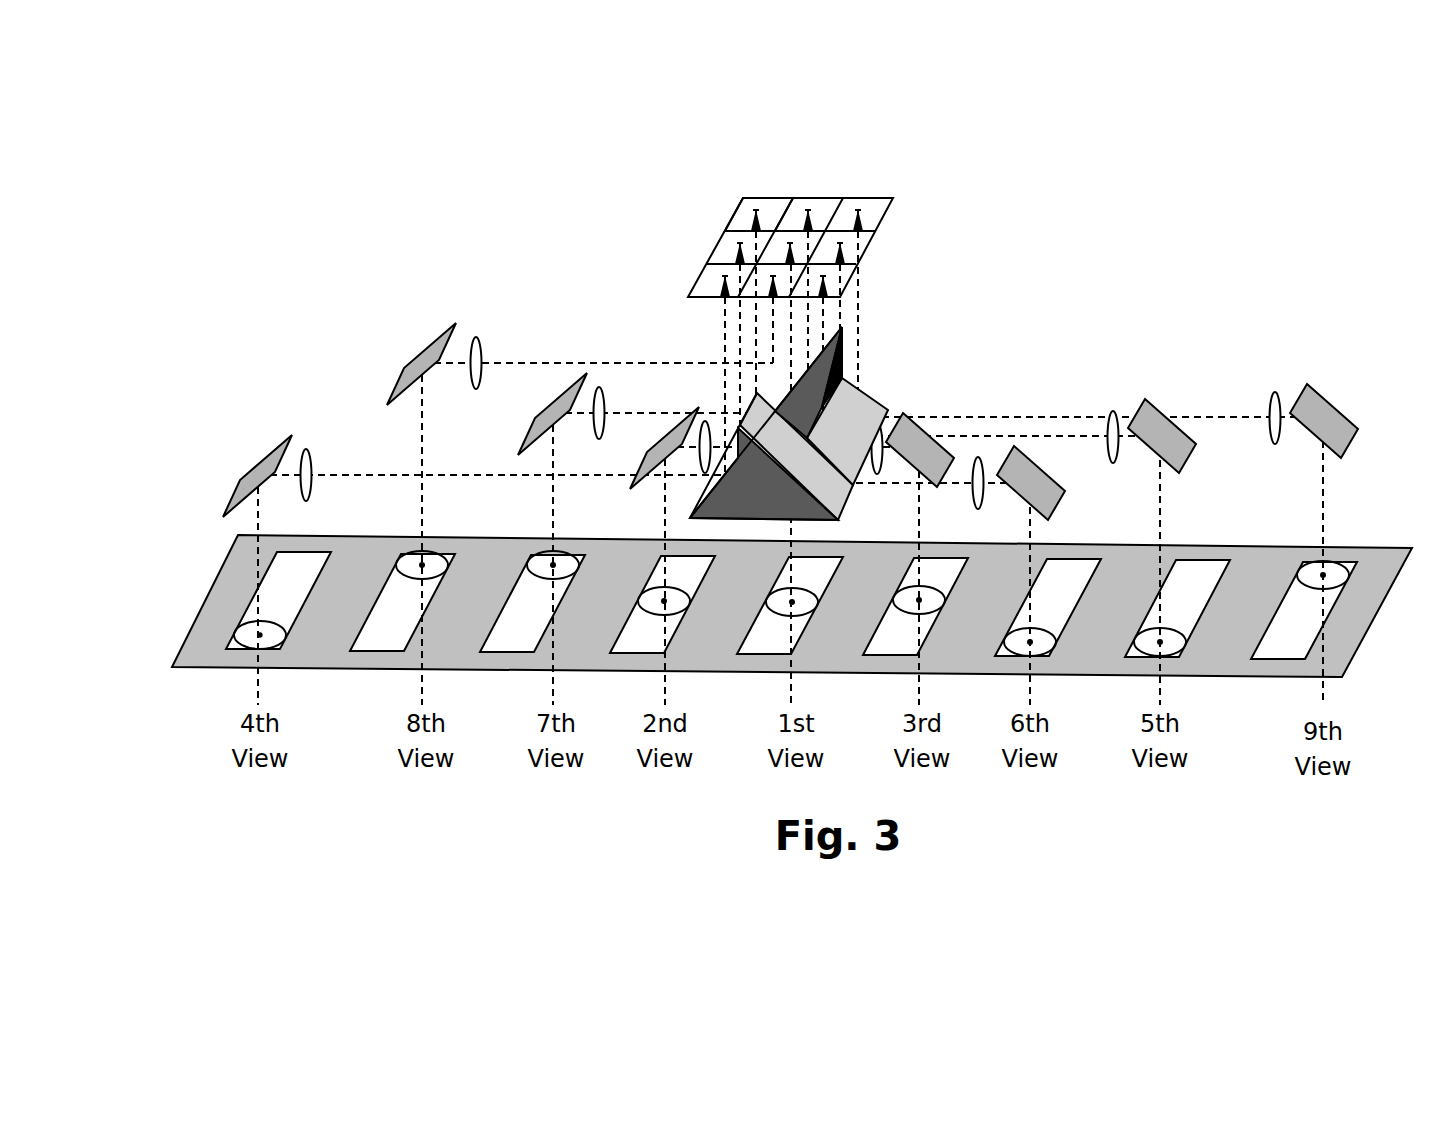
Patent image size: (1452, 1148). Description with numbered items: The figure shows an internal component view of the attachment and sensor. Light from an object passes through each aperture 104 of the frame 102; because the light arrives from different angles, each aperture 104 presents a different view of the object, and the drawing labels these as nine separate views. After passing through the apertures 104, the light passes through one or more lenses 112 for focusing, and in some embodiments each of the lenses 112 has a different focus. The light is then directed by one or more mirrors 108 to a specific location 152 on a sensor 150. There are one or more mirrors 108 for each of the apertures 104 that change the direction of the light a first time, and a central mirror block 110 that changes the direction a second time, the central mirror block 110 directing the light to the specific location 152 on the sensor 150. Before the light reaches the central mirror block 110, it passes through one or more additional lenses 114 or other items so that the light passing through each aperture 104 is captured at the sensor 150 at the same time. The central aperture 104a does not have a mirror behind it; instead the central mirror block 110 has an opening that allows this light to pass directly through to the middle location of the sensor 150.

The frame 102 is at (1348, 640).
The aperture 104 is at (1275, 647).
The central aperture 104a is at (767, 637).
The mirror 108 is at (1310, 397).
The central mirror block 110 is at (877, 384).
The lens 112 is at (250, 630).
The additional lens 114 is at (303, 448).
The sensor 150 is at (824, 219).
The specific location 152 is at (770, 205).